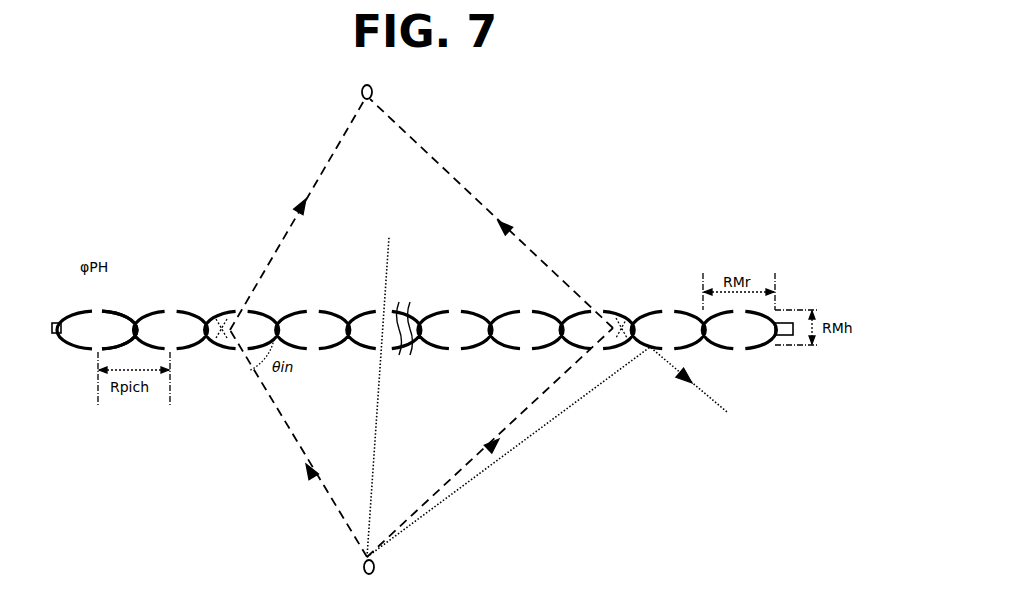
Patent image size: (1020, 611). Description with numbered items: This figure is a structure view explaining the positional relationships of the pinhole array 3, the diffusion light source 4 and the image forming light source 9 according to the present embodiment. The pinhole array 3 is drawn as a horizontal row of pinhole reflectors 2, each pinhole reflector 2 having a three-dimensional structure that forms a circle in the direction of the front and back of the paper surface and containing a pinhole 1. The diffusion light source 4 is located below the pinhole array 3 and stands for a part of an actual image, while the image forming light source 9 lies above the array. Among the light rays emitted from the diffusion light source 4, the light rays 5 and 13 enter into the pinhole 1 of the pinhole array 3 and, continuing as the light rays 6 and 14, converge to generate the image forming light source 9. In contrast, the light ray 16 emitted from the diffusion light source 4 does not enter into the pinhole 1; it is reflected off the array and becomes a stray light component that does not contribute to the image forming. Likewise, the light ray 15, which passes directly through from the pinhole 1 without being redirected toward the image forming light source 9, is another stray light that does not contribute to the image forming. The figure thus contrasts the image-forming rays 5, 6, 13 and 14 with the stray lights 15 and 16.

The pinhole 1 is at (98, 312).
The pinhole reflector 2 is at (121, 312).
The pinhole array 3 is at (56, 322).
The diffusion light source 4 is at (374, 566).
The light ray 5 is at (298, 443).
The light ray 6 is at (297, 214).
The image forming light source 9 is at (372, 93).
The light ray 13 is at (490, 442).
The light ray 14 is at (491, 213).
The stray light 15 is at (398, 384).
The stray light 16 is at (596, 452).